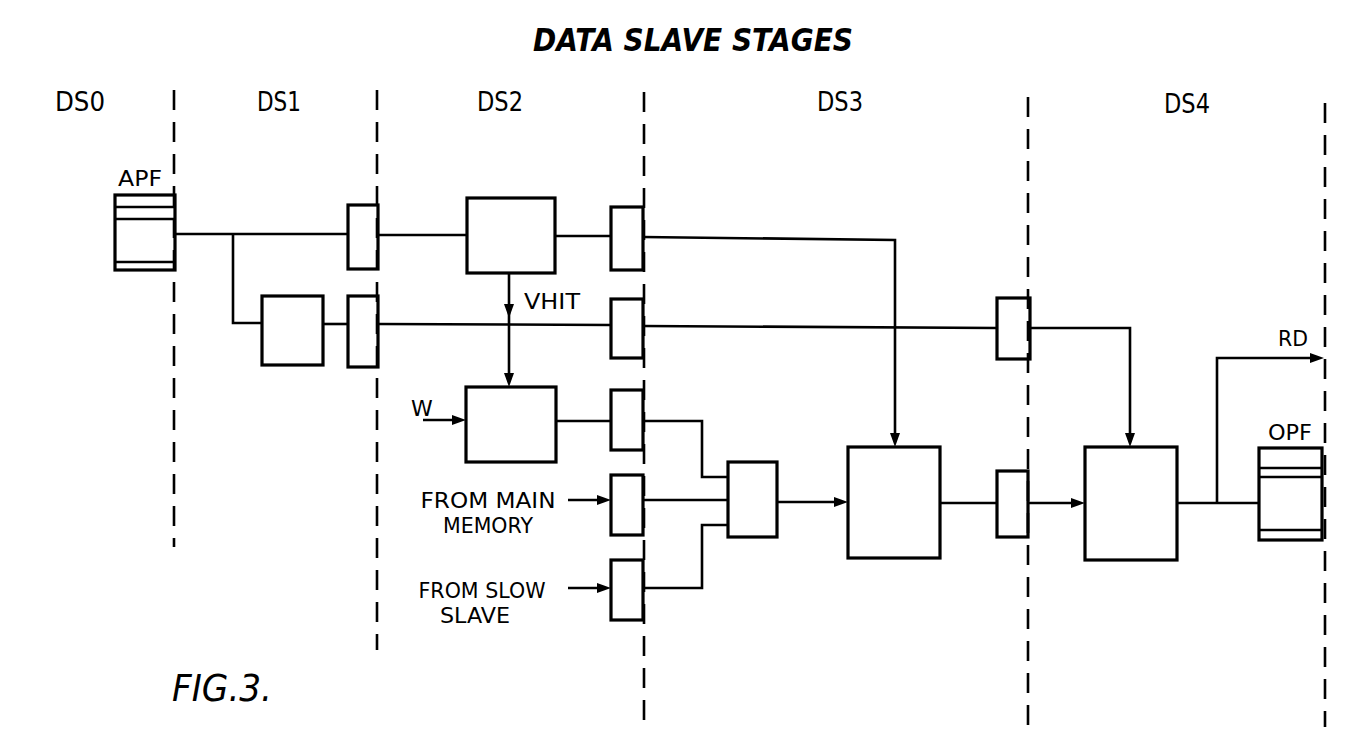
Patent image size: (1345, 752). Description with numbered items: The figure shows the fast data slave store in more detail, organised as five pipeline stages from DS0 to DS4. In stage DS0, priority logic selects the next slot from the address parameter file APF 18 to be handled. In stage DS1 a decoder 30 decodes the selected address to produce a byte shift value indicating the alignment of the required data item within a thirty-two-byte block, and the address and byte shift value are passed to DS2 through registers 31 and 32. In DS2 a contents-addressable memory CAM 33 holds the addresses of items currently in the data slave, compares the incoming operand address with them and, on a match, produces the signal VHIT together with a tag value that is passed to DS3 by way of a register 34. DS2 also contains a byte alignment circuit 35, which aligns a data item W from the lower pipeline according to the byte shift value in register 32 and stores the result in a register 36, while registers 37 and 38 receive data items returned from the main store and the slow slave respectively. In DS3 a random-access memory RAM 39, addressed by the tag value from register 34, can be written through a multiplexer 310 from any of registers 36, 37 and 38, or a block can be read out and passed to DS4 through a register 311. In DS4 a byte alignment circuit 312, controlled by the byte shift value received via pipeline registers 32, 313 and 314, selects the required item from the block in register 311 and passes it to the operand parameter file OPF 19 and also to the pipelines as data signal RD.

The address parameter file 18 is at (132, 272).
The operand parameter file 19 is at (1300, 543).
The decoder 30 is at (305, 366).
The register 31 is at (352, 206).
The register 32 is at (356, 368).
The contents-addressable memory 33 is at (467, 206).
The register 34 is at (611, 208).
The byte alignment circuit 35 is at (478, 387).
The register 36 is at (645, 412).
The register 37 is at (645, 482).
The register 38 is at (645, 568).
The random-access memory 39 is at (890, 559).
The multiplexer 310 is at (757, 538).
The register 311 is at (1003, 538).
The byte alignment circuit 312 is at (1138, 561).
The pipeline register 313 is at (645, 318).
The pipeline register 314 is at (1003, 360).